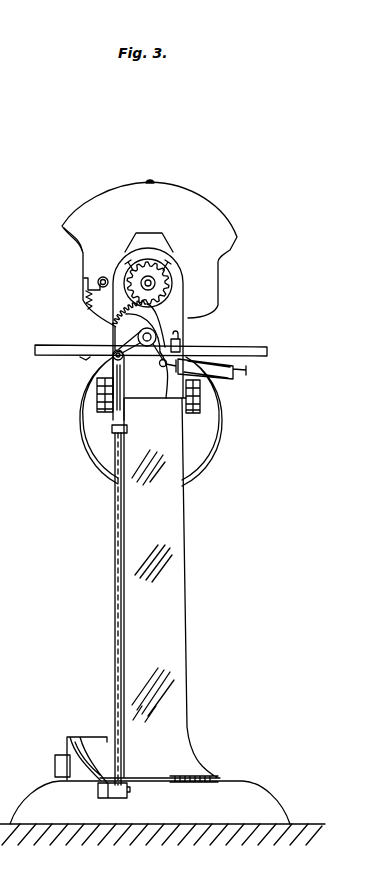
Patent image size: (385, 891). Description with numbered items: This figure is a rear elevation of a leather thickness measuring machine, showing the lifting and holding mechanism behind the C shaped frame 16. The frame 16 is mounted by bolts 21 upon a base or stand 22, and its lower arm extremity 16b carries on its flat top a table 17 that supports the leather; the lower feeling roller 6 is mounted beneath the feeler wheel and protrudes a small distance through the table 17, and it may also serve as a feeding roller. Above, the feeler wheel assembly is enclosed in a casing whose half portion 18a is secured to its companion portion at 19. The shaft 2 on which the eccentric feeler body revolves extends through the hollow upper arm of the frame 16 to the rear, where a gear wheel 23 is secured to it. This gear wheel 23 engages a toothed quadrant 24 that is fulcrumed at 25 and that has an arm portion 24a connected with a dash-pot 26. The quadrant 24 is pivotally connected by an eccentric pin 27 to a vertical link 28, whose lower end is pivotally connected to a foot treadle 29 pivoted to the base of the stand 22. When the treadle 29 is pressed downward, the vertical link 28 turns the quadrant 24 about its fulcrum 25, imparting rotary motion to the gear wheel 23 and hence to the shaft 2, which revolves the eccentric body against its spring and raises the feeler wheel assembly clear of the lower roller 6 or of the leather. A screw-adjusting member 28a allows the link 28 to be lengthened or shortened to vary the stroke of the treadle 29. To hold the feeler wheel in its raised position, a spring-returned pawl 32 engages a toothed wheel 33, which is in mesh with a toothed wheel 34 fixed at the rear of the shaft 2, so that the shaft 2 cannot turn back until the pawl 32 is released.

The shaft 2 is at (155, 286).
The lower feeling roller 6 is at (107, 453).
The C shaped frame 16 is at (178, 316).
The arm extremity 16b is at (84, 360).
The table 17 is at (267, 348).
The casing half portion 18a is at (104, 210).
The casing securing point 19 is at (153, 181).
The bolts 21 is at (100, 407).
The base or stand 22 is at (173, 615).
The gear wheel 23 is at (168, 274).
The toothed quadrant 24 is at (128, 336).
The arm portion 24a is at (166, 400).
The fulcrum 25 is at (147, 346).
The dash-pot 26 is at (222, 372).
The eccentric pin 27 is at (113, 359).
The vertical link 28 is at (120, 603).
The screw-adjusting member 28a is at (107, 447).
The foot treadle 29 is at (56, 758).
The spring-returned pawl 32 is at (84, 282).
The toothed wheel 33 is at (99, 279).
The toothed wheel 34 is at (66, 228).